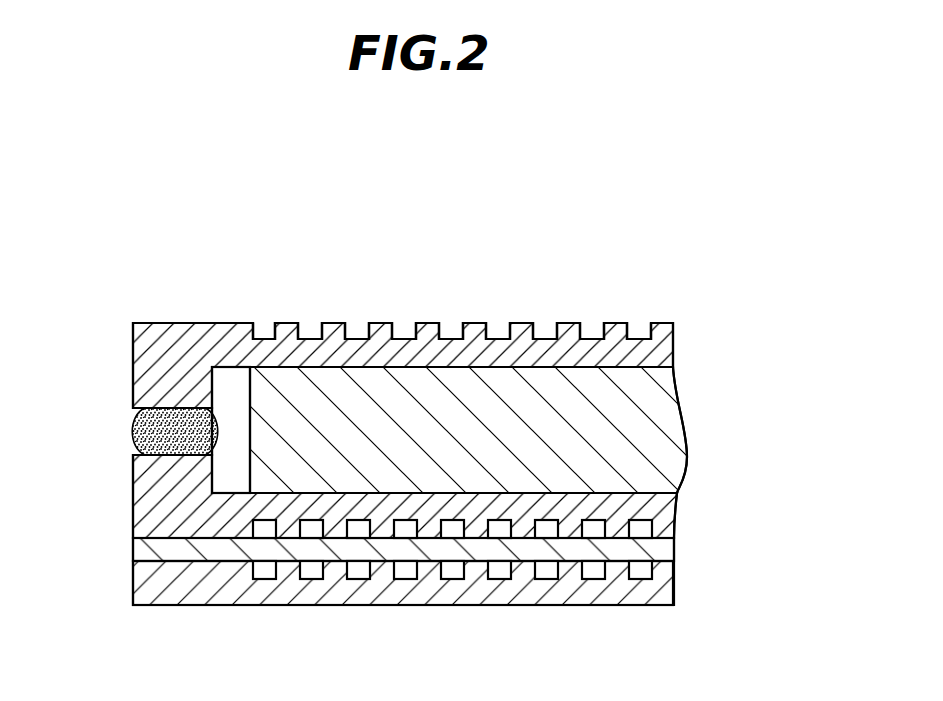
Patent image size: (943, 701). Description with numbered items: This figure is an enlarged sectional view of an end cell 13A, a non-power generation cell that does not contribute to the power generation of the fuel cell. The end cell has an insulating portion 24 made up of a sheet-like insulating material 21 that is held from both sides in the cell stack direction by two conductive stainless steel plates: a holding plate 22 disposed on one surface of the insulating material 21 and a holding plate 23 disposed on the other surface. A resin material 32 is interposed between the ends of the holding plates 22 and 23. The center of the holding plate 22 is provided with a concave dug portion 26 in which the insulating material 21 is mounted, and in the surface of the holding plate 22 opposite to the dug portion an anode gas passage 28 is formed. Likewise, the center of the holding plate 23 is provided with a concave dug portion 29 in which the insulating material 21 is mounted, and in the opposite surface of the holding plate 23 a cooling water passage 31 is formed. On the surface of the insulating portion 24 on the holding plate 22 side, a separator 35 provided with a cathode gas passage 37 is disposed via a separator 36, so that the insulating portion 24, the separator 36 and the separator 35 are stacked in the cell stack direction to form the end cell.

The end cell 13A is at (710, 270).
The insulating material 21 is at (670, 462).
The holding plate 22 is at (667, 517).
The holding plate 23 is at (673, 356).
The insulating portion 24 is at (768, 323).
The dug portion 26 is at (272, 494).
The anode gas passage 28 is at (550, 528).
The dug portion 29 is at (272, 372).
The cooling water passage 31 is at (543, 340).
The resin material 32 is at (133, 432).
The separator 35 is at (670, 580).
The separator 36 is at (665, 545).
The cathode gas passage 37 is at (643, 572).